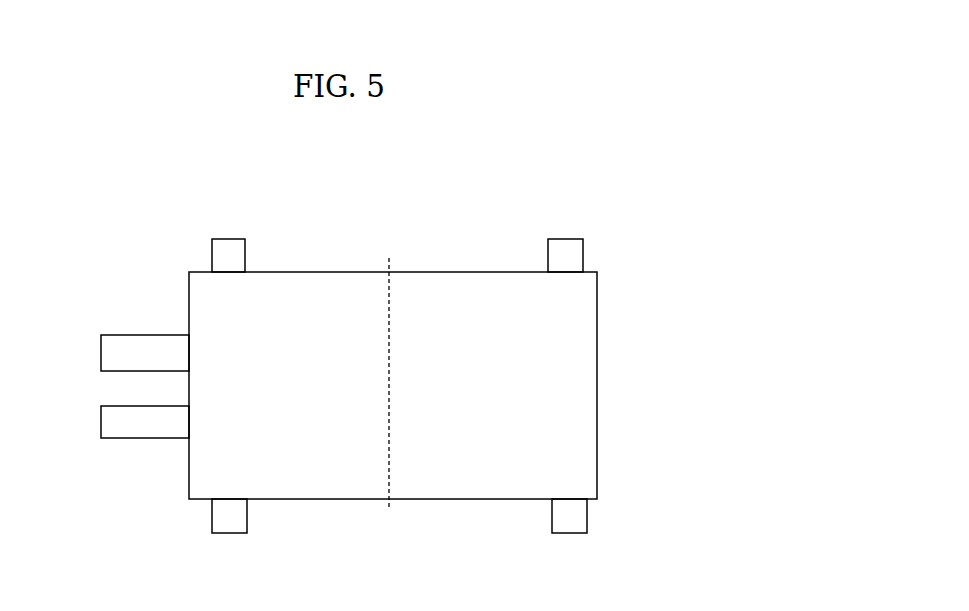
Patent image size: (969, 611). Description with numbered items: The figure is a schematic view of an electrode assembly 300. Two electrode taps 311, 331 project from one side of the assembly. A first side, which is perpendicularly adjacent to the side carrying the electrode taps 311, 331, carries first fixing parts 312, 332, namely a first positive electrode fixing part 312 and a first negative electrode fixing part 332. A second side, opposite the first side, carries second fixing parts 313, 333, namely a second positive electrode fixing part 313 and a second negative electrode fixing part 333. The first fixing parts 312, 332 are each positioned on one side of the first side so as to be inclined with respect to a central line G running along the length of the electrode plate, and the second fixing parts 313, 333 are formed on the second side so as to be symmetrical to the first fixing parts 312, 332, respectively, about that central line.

The electrode assembly 300 is at (82, 220).
The second negative electrode fixing part 333 is at (227, 252).
The second positive electrode fixing part 313 is at (567, 252).
The first positive electrode fixing part 312 is at (222, 515).
The first negative electrode fixing part 332 is at (560, 516).
The electrode tap 331 is at (113, 350).
The electrode tap 311 is at (113, 418).